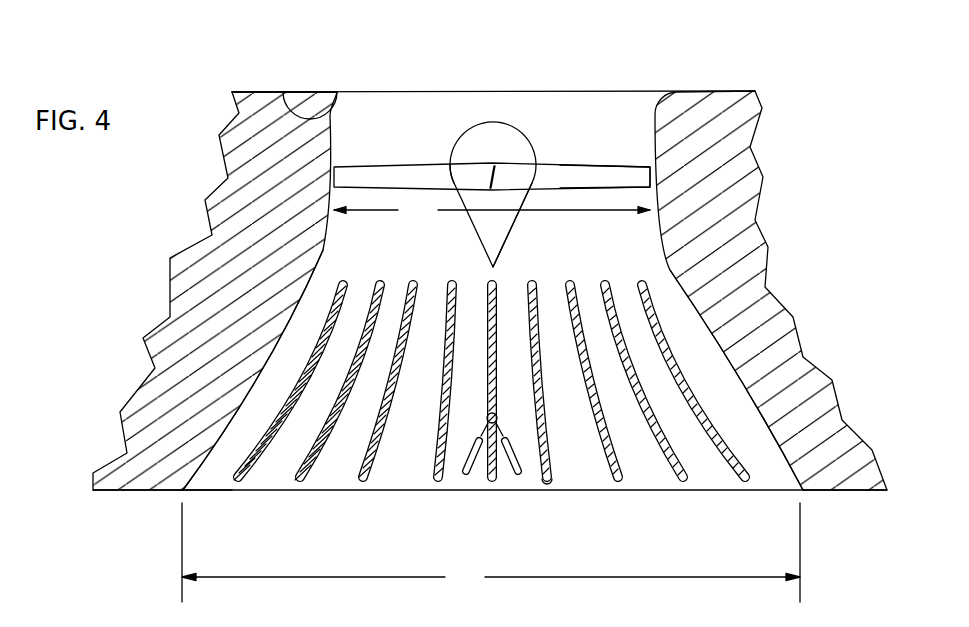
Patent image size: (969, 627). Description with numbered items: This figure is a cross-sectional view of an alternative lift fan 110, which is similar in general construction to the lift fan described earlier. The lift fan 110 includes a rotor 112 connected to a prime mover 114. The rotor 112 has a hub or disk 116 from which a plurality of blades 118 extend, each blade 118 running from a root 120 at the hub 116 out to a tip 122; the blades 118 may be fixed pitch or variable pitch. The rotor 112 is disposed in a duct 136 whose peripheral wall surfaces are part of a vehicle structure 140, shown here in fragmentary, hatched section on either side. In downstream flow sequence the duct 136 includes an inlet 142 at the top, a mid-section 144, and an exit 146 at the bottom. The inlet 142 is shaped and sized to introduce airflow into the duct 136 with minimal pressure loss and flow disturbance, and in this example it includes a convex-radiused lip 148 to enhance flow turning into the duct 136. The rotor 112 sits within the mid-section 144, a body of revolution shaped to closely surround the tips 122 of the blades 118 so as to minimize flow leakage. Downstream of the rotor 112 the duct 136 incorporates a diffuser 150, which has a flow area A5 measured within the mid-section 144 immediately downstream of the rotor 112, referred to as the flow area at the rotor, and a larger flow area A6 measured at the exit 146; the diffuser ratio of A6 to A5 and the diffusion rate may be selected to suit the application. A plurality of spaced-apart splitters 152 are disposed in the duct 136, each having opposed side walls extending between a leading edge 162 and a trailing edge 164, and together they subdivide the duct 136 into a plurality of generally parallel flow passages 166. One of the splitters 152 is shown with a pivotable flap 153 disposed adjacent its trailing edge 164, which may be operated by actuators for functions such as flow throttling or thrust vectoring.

The lift fan 110 is at (645, 68).
The rotor 112 is at (587, 125).
The prime mover 114 is at (491, 130).
The hub or disk 116 is at (526, 177).
The blade 118 is at (628, 173).
The root 120 is at (450, 180).
The tip 122 is at (340, 175).
The duct 136 is at (298, 296).
The vehicle structure 140 is at (740, 97).
The inlet 142 is at (333, 92).
The mid-section 144 is at (323, 250).
The exit 146 is at (205, 494).
The convex-radiused lip 148 is at (283, 92).
The diffuser 150 is at (720, 338).
The splitter 152 is at (587, 397).
The pivotable flap 153 is at (492, 486).
The leading edge 162 is at (533, 284).
The trailing edge 164 is at (548, 484).
The flow passage 166 is at (640, 447).
The flow area at the rotor A5 is at (492, 210).
The flow area at the exit A6 is at (491, 552).